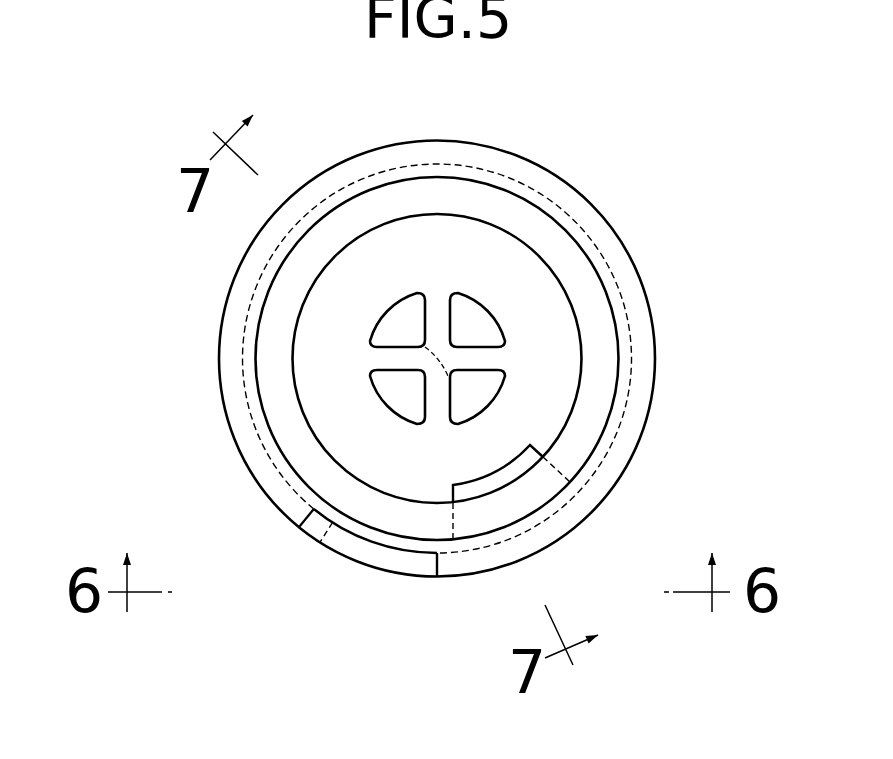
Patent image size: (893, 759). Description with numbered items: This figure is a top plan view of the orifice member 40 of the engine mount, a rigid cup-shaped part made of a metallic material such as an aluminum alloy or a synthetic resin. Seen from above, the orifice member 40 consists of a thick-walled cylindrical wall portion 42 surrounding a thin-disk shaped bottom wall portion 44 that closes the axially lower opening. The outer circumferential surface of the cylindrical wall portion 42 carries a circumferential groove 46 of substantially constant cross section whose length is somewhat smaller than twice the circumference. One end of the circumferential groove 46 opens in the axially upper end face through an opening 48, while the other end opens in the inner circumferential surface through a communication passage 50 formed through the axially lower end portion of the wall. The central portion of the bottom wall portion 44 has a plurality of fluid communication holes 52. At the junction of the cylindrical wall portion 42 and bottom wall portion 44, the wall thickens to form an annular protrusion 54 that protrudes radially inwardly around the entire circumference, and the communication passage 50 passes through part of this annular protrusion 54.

The orifice member 40 is at (673, 250).
The cylindrical wall portion 42 is at (247, 273).
The bottom wall portion 44 is at (512, 250).
The circumferential groove 46 is at (438, 166).
The opening 48 is at (302, 523).
The communication passage 50 is at (458, 523).
The fluid communication holes 52 is at (396, 299).
The annular protrusion 54 is at (597, 352).